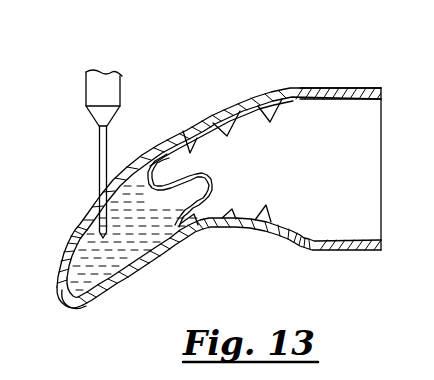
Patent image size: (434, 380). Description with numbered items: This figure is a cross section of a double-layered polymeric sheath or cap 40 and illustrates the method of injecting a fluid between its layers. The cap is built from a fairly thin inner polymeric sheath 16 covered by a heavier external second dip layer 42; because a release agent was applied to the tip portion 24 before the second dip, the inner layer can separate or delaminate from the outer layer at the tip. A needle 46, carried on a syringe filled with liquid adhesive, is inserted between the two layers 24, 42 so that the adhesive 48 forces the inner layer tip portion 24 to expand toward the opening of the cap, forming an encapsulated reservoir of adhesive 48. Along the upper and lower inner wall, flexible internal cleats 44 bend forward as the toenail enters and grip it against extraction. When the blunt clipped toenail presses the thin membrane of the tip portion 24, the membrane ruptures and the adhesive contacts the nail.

The polymeric sheath or cap 40 is at (290, 70).
The polymeric sheath 16 is at (334, 90).
The internal cleats 44 is at (252, 100).
The tip portion 24 is at (213, 174).
The adhesive 48 is at (82, 262).
The second dip layer 42 is at (110, 283).
The needle 46 is at (93, 87).